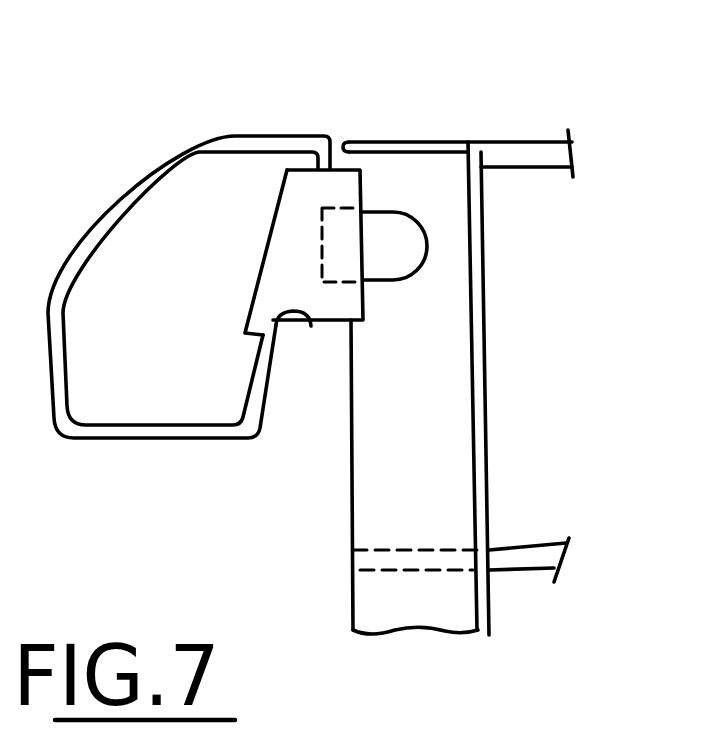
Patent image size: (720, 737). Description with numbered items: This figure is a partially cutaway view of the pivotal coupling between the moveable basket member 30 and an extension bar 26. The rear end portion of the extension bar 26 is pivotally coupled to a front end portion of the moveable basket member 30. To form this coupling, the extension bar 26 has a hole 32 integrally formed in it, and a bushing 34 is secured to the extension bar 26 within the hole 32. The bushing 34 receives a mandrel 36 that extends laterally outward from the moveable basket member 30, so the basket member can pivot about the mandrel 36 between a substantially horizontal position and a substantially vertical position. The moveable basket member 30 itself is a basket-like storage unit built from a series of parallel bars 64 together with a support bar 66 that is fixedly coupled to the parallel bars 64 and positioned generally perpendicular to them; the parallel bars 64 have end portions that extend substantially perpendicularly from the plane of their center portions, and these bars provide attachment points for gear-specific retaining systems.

The extension bar 26 is at (172, 151).
The moveable basket member 30 is at (499, 388).
The hole 32 is at (311, 326).
The bushing 34 is at (338, 170).
The mandrel 36 is at (403, 262).
The parallel bars 64 is at (492, 153).
The support bar 66 is at (485, 252).